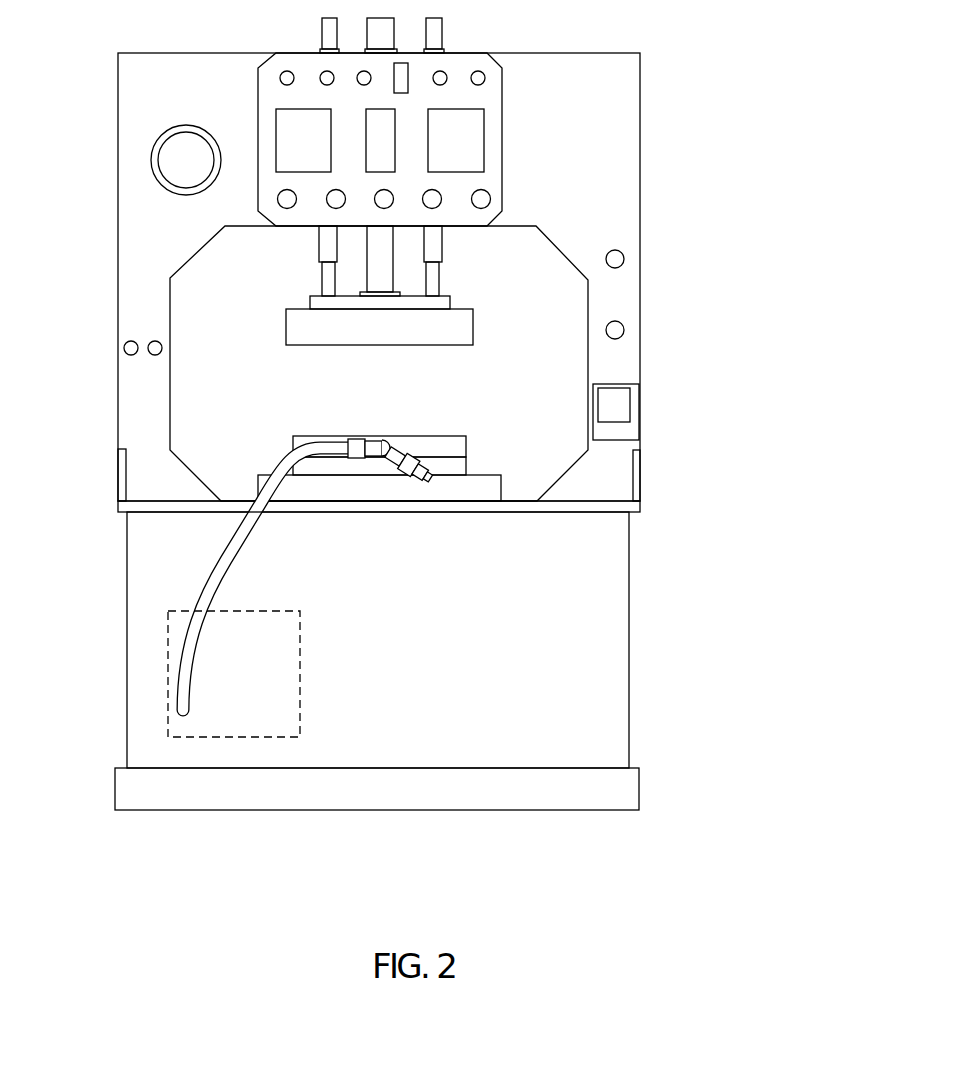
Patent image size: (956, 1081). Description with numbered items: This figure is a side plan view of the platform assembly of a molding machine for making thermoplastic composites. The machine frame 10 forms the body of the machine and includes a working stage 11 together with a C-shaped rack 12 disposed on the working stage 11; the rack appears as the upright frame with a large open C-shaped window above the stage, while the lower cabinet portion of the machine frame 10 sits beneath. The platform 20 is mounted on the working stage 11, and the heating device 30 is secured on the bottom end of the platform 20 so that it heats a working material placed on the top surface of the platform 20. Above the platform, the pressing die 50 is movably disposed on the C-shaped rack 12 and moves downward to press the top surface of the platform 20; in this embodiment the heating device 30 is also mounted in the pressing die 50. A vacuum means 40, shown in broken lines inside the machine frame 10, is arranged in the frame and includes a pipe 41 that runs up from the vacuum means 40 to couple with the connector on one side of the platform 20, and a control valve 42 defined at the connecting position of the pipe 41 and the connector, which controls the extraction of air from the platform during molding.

The machine frame 10 is at (615, 648).
The working stage 11 is at (167, 505).
The C-shaped rack 12 is at (130, 207).
The platform 20 is at (463, 447).
The heating device 30 is at (466, 467).
The vacuum means 40 is at (293, 657).
The pipe 41 is at (225, 568).
The control valve 42 is at (381, 458).
The pressing die 50 is at (293, 325).